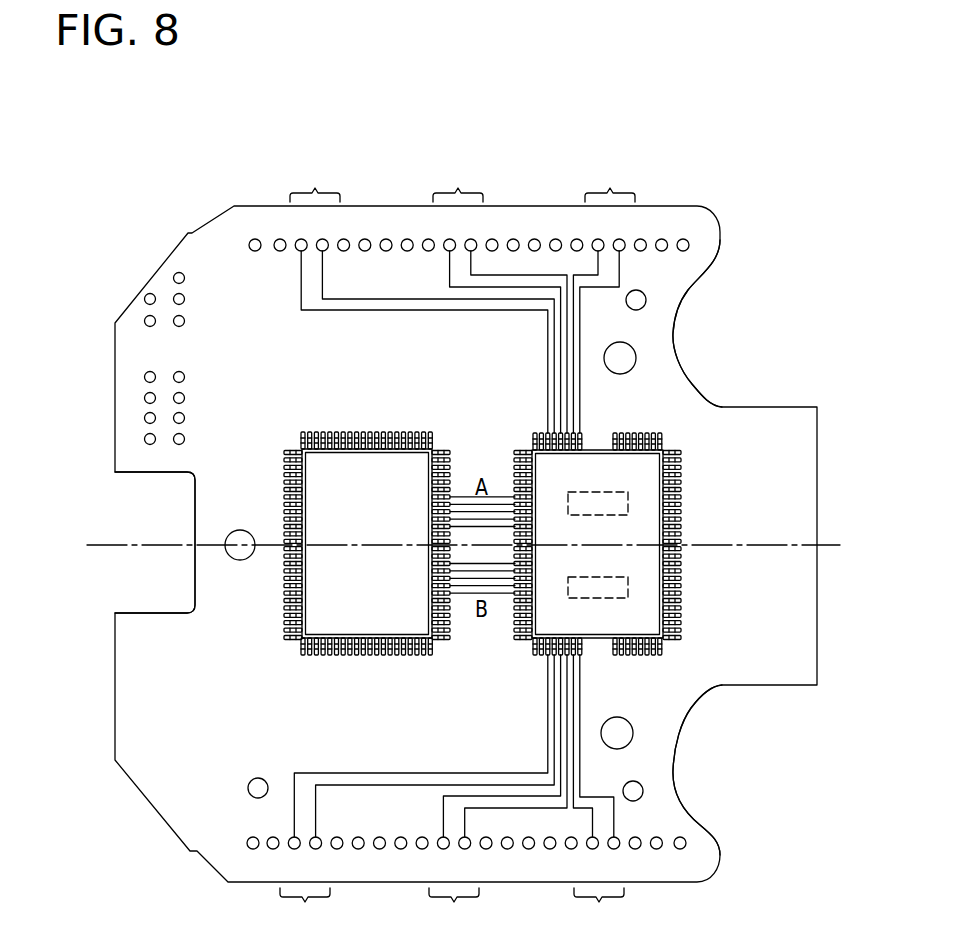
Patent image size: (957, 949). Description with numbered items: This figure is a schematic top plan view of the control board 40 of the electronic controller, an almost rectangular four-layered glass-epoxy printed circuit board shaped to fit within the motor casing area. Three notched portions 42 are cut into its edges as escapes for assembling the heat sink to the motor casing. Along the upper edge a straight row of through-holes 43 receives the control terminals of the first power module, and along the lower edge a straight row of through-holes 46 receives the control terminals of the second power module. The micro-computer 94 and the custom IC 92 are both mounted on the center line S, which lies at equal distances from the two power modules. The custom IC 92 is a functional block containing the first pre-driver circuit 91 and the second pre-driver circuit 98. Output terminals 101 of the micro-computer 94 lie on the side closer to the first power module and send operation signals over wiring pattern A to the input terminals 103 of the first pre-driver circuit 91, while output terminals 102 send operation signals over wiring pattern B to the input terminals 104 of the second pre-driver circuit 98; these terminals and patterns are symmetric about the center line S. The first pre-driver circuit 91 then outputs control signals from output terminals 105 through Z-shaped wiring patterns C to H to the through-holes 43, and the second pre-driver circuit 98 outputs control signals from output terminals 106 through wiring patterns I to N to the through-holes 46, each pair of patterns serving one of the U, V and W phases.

The control board 40 is at (172, 782).
The notched portions 42 is at (148, 472).
The through-holes 43 is at (255, 246).
The through-holes 46 is at (253, 848).
The first pre-driver circuit 91 is at (628, 493).
The custom IC 92 is at (640, 620).
The micro-computer 94 is at (338, 613).
The second pre-driver circuit 98 is at (628, 598).
The output terminals 101 is at (452, 498).
The output terminals 102 is at (452, 597).
The input terminals 103 is at (512, 498).
The input terminals 104 is at (505, 597).
The output terminals 105 is at (580, 438).
The output terminals 106 is at (580, 650).
The center line S is at (100, 545).